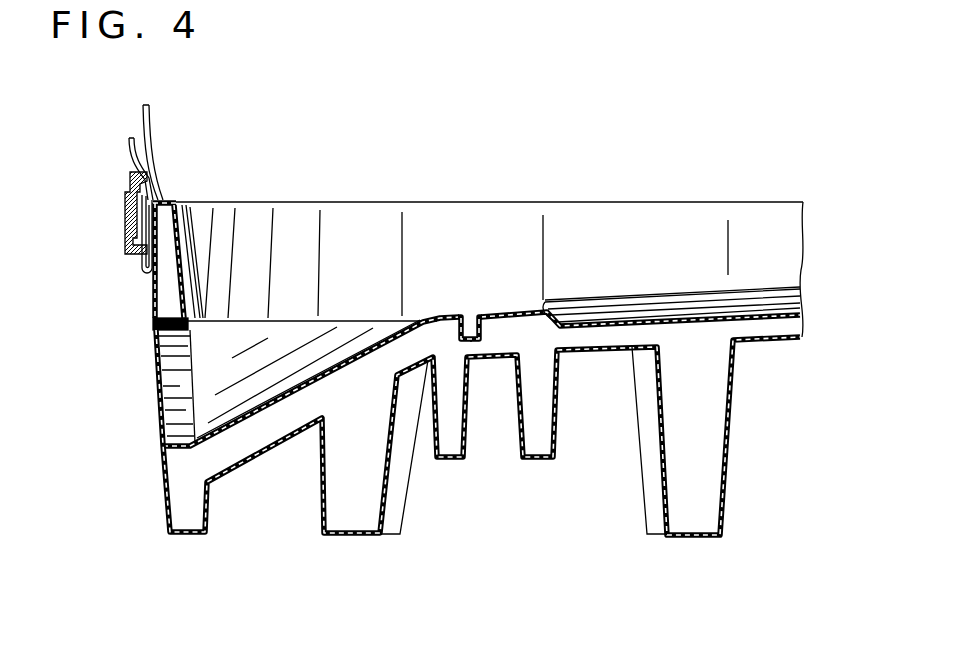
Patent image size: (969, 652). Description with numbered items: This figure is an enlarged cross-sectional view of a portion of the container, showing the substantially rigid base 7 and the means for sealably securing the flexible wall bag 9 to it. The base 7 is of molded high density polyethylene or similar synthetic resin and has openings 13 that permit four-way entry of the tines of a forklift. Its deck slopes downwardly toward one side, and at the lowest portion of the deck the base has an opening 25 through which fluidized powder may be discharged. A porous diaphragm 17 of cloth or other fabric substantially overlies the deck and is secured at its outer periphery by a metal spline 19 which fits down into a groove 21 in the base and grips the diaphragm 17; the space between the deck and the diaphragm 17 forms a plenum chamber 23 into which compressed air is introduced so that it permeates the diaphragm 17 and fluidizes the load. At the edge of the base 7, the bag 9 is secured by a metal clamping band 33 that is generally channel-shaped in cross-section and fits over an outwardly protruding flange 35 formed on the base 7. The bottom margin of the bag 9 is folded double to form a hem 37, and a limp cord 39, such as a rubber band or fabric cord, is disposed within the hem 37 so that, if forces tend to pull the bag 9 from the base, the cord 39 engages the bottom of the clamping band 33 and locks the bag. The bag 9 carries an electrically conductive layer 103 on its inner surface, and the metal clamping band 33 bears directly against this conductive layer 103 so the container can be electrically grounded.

The base 7 is at (582, 203).
The flexible wall bag 9 is at (160, 134).
The electrically conductive layer 103 is at (157, 160).
The clamping band 33 is at (127, 217).
The flange 35 is at (173, 203).
The hem 37 is at (133, 265).
The cord 39 is at (147, 267).
The opening 25 is at (186, 382).
The metal spline 19 is at (472, 316).
The groove 21 is at (485, 341).
The plenum chamber 23 is at (800, 293).
The porous diaphragm 17 is at (695, 300).
The openings 13 is at (397, 508).